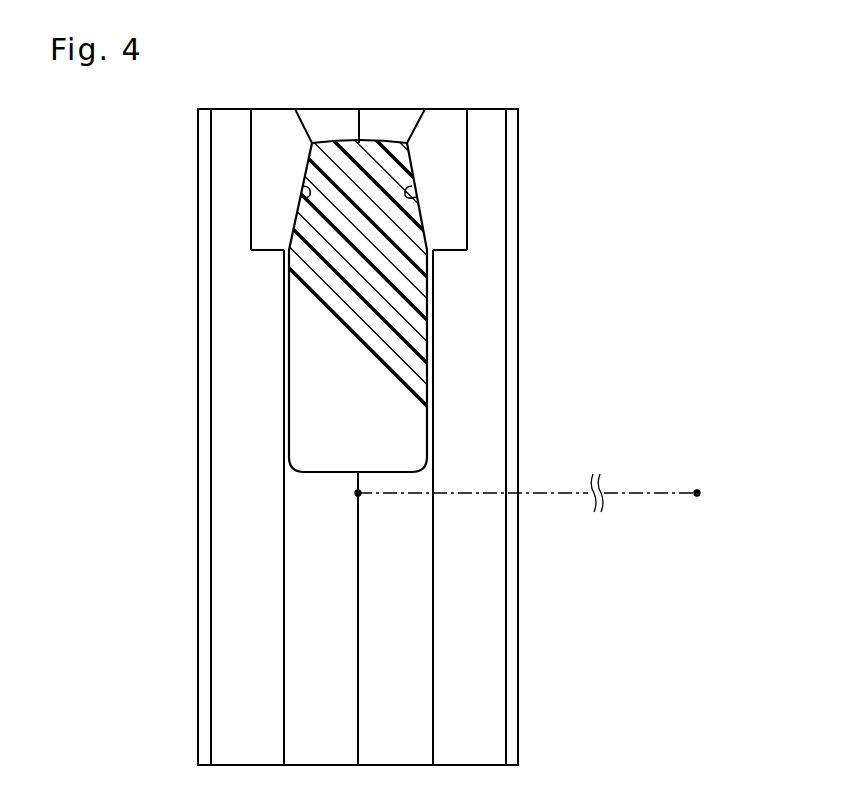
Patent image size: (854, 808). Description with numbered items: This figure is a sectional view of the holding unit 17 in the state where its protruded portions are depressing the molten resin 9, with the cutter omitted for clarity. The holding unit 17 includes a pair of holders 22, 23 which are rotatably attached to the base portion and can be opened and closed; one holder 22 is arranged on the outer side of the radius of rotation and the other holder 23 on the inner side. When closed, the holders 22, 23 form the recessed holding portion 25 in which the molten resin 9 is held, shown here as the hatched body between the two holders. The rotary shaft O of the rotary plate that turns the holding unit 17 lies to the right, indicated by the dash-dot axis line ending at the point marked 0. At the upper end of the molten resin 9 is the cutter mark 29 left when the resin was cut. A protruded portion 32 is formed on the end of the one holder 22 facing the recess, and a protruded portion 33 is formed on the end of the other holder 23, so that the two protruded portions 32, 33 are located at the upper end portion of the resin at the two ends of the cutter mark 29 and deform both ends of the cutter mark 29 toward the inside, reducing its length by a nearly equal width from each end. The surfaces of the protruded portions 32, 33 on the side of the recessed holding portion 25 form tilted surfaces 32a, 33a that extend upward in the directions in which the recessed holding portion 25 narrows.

The holding unit 17 is at (562, 123).
The holder 22 is at (237, 303).
The holder 23 is at (498, 303).
The recessed holding portion 25 is at (413, 622).
The cutter mark 29 is at (380, 138).
The protruded portion 32 is at (281, 135).
The protruded portion 33 is at (448, 128).
The tilted surface 32a is at (305, 198).
The tilted surface 33a is at (412, 197).
The molten resin 9 is at (410, 423).
The rotary shaft 0 is at (529, 485).